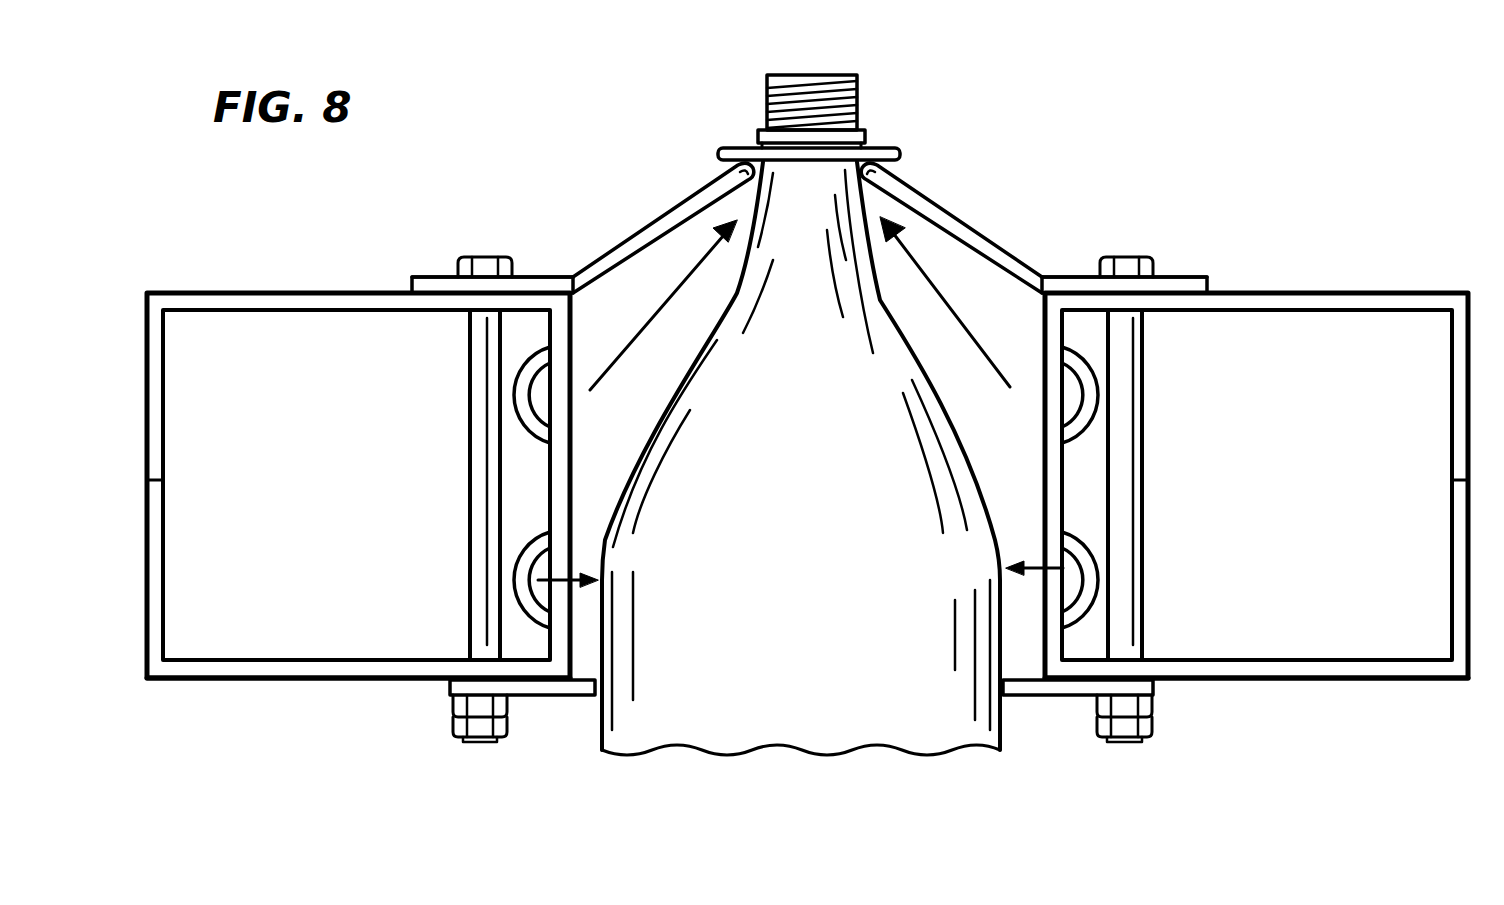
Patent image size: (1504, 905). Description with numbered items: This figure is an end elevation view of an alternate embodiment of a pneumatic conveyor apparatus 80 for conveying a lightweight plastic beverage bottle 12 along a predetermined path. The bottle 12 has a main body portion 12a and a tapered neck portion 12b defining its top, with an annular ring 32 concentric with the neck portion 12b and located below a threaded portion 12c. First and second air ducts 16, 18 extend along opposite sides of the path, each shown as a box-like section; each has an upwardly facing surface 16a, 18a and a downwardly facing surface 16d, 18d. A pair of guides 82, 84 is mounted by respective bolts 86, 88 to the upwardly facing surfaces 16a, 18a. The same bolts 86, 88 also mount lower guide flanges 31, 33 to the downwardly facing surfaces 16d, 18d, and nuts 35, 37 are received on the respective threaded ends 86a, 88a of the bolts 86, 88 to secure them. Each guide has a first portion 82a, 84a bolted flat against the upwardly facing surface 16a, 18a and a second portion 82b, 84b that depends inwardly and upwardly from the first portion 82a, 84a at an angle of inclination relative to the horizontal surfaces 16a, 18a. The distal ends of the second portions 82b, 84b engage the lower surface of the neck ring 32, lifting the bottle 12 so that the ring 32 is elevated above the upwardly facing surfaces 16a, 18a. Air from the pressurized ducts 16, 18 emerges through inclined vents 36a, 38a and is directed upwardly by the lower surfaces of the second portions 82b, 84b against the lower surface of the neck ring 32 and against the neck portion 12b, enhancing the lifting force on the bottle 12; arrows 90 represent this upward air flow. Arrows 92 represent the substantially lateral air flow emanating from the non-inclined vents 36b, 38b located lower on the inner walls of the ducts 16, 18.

The plastic beverage bottle 12 is at (835, 657).
The main body portion 12a is at (600, 715).
The tapered neck portion 12b is at (740, 272).
The threaded portion 12c is at (765, 93).
The first air duct 16 is at (147, 293).
The upwardly facing surface 16a is at (300, 293).
The downwardly facing surface 16d is at (240, 680).
The second air duct 18 is at (1468, 293).
The upwardly facing surface 18a is at (1340, 293).
The downwardly facing surface 18d is at (1385, 680).
The lower guide flange 31 is at (540, 698).
The annular ring 32 is at (885, 148).
The lower guide flange 33 is at (1045, 698).
The nut 35 is at (455, 717).
The inclined vent 36a is at (543, 400).
The non-inclined vent 36b is at (540, 568).
The nut 37 is at (1153, 717).
The inclined vent 38a is at (1070, 400).
The non-inclined vent 38b is at (1072, 555).
The pneumatic conveyor apparatus 80 is at (596, 79).
The guide 82 is at (565, 277).
The first portion 82a is at (430, 277).
The second portion 82b is at (648, 228).
The guide 84 is at (1050, 277).
The first portion 84a is at (1195, 277).
The second portion 84b is at (965, 225).
The bolt 86 is at (480, 257).
The threaded end 86a is at (480, 742).
The bolt 88 is at (1128, 257).
The threaded end 88a is at (1125, 742).
The arrows 90 is at (657, 335).
The arrows 92 is at (585, 598).